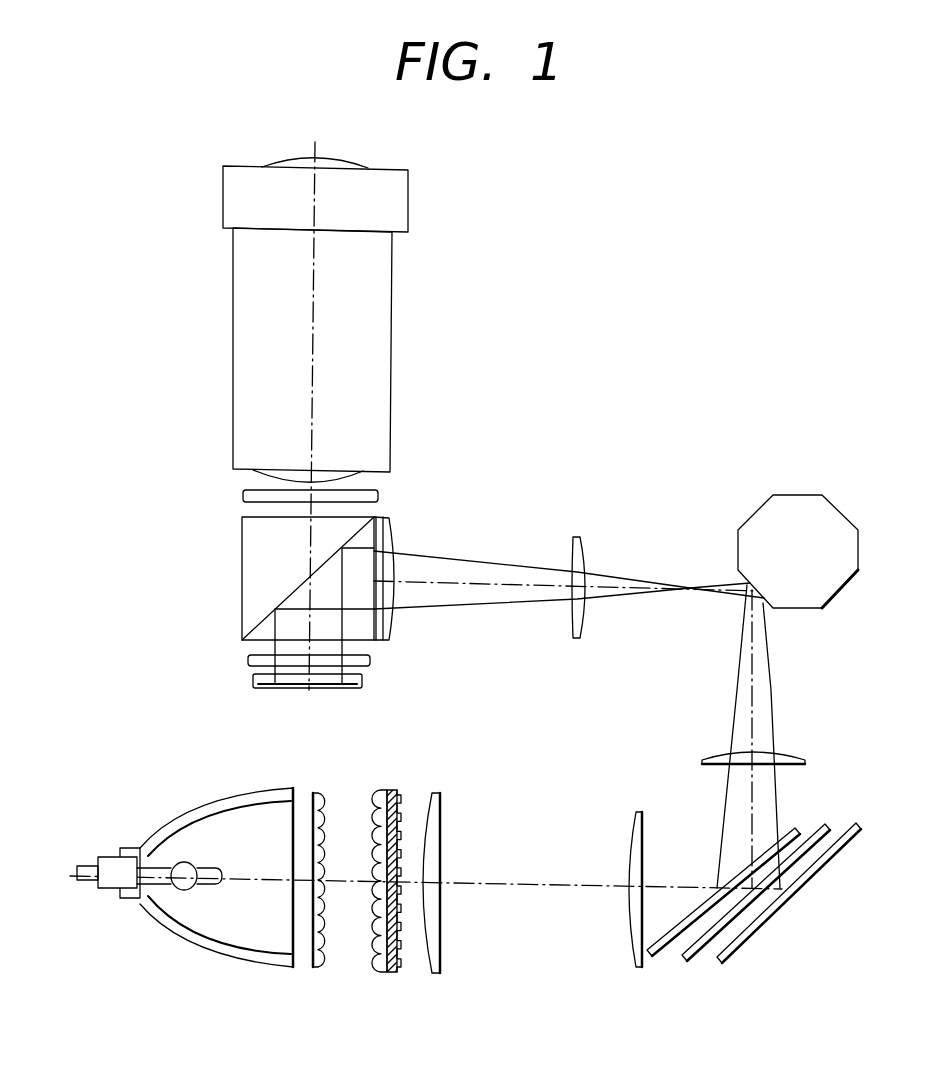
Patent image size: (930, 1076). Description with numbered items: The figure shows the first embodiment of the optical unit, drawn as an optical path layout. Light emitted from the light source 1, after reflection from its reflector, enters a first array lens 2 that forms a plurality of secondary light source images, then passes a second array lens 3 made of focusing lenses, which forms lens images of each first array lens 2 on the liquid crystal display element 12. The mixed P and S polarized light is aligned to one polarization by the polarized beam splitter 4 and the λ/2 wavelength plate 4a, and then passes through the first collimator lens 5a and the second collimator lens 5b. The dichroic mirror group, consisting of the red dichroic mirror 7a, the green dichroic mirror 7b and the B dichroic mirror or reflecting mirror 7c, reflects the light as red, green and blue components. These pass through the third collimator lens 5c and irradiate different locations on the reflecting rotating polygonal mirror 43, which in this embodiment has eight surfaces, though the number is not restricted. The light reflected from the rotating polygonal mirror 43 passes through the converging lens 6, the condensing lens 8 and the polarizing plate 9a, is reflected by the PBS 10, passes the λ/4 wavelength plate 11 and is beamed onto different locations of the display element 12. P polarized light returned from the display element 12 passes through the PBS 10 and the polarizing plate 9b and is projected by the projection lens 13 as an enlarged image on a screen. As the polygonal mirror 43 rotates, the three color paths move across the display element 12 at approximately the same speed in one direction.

The light source 1 is at (245, 958).
The first array lens 2 is at (322, 968).
The second array lens 3 is at (378, 971).
The polarized beam splitter 4 is at (392, 973).
The λ/2 wavelength plate 4a is at (400, 971).
The first collimator lens 5a is at (437, 975).
The second collimator lens 5b is at (634, 968).
The third collimator lens 5c is at (806, 762).
The converging lens 6 is at (574, 537).
The red dichroic mirror 7a is at (658, 952).
The green dichroic mirror 7b is at (692, 955).
The B dichroic mirror or reflecting mirror 7c is at (727, 957).
The condensing lens 8 is at (397, 628).
The polarizing plate 9a is at (378, 643).
The polarizing plate 9b is at (244, 493).
The PBS 10 is at (242, 567).
The λ/4 wavelength plate 11 is at (248, 657).
The liquid crystal display element 12 is at (253, 681).
The projection lens 13 is at (392, 273).
The reflecting rotating polygonal mirror 43 is at (838, 598).